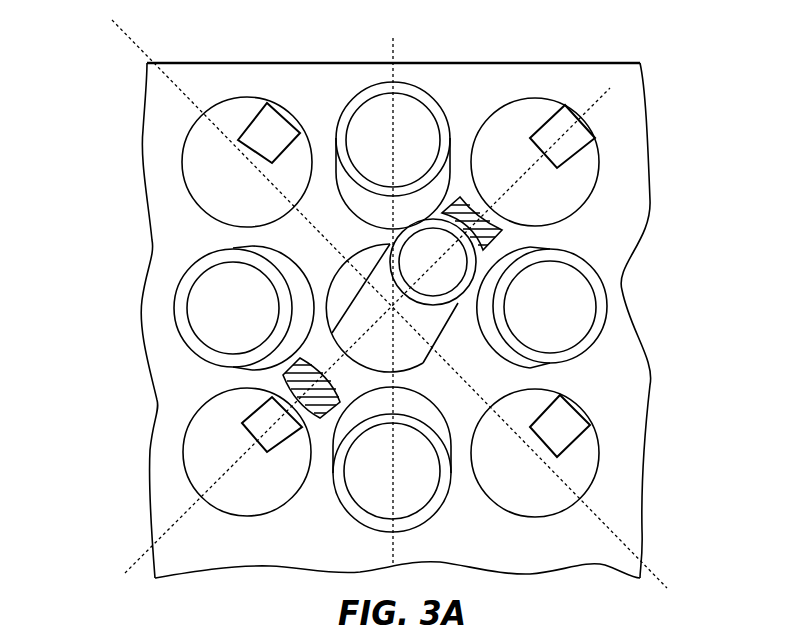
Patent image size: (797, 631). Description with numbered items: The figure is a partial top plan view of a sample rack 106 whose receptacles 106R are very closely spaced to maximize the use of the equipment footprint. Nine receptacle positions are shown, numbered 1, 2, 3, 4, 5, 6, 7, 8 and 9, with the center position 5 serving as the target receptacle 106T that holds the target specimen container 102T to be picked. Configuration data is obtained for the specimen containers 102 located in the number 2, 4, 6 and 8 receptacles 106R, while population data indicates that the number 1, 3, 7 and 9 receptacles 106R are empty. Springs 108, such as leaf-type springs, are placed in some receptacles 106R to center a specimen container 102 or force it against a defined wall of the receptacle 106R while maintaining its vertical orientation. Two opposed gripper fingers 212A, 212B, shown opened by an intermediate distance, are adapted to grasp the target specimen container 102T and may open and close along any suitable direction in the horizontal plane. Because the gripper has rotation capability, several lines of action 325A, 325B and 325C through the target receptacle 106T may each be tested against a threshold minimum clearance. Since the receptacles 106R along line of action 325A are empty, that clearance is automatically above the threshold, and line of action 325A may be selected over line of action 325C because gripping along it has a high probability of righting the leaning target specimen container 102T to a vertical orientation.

The sample rack 106 is at (654, 112).
The specimen container 102 is at (383, 310).
The target specimen container 102T is at (255, 246).
The receptacle 106R is at (390, 308).
The target receptacle 106T is at (538, 313).
The spring 108 is at (576, 156).
The gripper finger 212A is at (284, 378).
The gripper finger 212B is at (502, 232).
The line of action 325A is at (128, 563).
The line of action 325B is at (393, 45).
The line of action 325C is at (668, 582).
The number 1 receptacle 1 is at (247, 162).
The number 2 receptacle 2 is at (393, 155).
The number 3 receptacle 3 is at (535, 162).
The number 4 receptacle 4 is at (176, 303).
The number 5 receptacle 5 is at (401, 295).
The number 6 receptacle 6 is at (542, 307).
The number 7 receptacle 7 is at (247, 452).
The number 8 receptacle 8 is at (392, 459).
The number 9 receptacle 9 is at (535, 453).